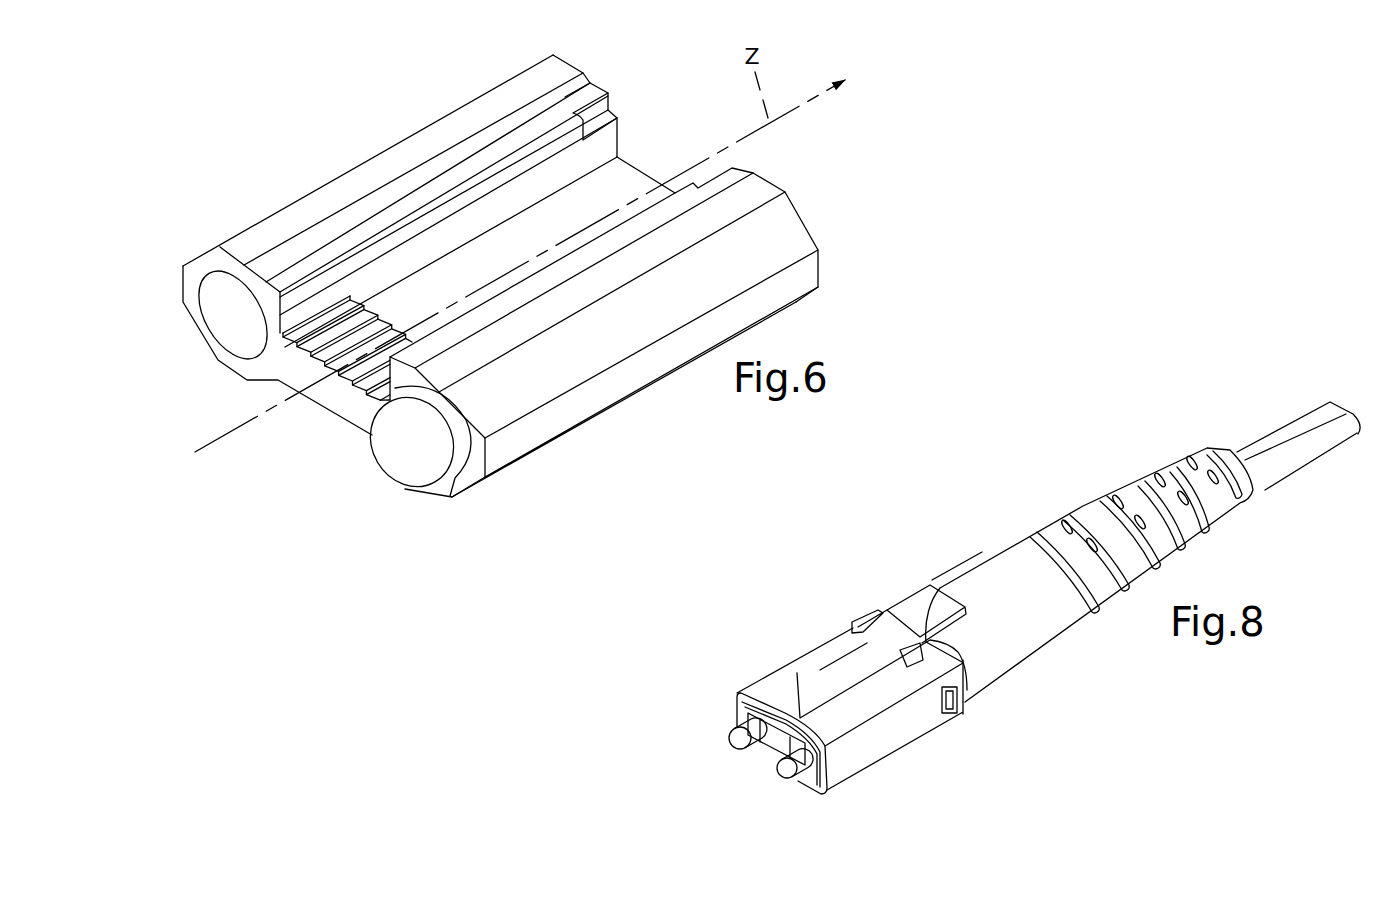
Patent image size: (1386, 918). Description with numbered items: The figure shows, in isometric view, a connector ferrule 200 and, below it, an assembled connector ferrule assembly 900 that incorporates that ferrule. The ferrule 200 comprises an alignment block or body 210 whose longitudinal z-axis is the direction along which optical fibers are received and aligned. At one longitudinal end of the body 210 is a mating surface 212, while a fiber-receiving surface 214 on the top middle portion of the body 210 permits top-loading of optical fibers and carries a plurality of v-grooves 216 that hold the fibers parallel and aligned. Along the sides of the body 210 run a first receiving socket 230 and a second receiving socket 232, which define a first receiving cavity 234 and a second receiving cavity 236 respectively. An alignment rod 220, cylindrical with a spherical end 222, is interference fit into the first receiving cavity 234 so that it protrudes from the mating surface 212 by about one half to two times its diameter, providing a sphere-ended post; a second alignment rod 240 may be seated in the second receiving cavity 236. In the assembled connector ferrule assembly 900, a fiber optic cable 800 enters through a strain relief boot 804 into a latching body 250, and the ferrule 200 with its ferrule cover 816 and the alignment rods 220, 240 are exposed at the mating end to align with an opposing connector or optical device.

In FIG. 6, the connector ferrule 200 is at (413, 72).
In FIG. 8, the connector ferrule 200 is at (803, 781).
In FIG. 6, the alignment block or body 210 is at (335, 185).
In FIG. 6, the mating surface 212 is at (338, 388).
In FIG. 6, the fiber-receiving surface 214 is at (635, 182).
In FIG. 6, the v-grooves 216 is at (356, 391).
In FIG. 6, the alignment rod 220 is at (396, 468).
In FIG. 8, the spherical end 222 is at (727, 742).
In FIG. 6, the first receiving socket 230 is at (577, 357).
In FIG. 6, the second receiving socket 232 is at (240, 245).
In FIG. 6, the first receiving cavity 234 is at (465, 461).
In FIG. 6, the second receiving cavity 236 is at (222, 325).
In FIG. 8, the second alignment rod 240 is at (779, 773).
In FIG. 8, the latching body 250 is at (888, 742).
In FIG. 8, the fiber optic cable 800 is at (1302, 458).
In FIG. 8, the strain relief boot 804 is at (1008, 655).
In FIG. 8, the ferrule cover 816 is at (770, 735).
In FIG. 8, the connector ferrule assembly 900 is at (905, 547).